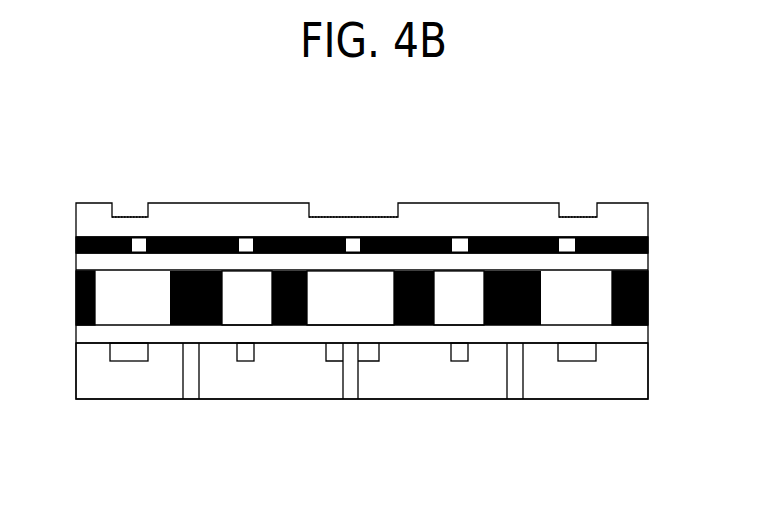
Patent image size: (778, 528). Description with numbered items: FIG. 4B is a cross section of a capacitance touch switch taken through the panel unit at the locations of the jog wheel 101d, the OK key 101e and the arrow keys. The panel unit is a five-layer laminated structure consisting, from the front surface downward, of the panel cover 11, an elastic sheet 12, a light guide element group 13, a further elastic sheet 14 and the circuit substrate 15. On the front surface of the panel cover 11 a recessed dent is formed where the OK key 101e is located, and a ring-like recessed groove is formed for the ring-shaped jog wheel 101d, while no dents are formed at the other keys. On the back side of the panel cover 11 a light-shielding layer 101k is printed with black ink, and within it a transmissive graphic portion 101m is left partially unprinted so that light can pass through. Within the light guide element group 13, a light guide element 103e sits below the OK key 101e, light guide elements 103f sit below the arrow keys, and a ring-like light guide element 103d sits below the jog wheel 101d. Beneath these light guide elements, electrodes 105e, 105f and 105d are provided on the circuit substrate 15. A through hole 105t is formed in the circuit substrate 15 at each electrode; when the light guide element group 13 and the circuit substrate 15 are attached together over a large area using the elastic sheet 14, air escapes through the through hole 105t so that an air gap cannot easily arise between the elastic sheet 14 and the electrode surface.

The panel cover 11 is at (88, 218).
The elastic sheet 12 is at (92, 263).
The light guide element group 13 is at (77, 300).
The elastic sheet 14 is at (88, 333).
The circuit substrate 15 is at (80, 372).
The jog wheel 101d is at (130, 212).
The OK key 101e is at (355, 212).
The transmissive graphic portion 101m is at (250, 234).
The light-shielding layer 101k is at (648, 247).
The light guide element 103d is at (105, 315).
The light guide element 103e is at (380, 315).
The light guide elements 103f is at (245, 315).
The electrode 105d is at (126, 362).
The electrode 105e is at (333, 362).
The electrode 105f is at (245, 362).
The through hole 105t is at (190, 380).